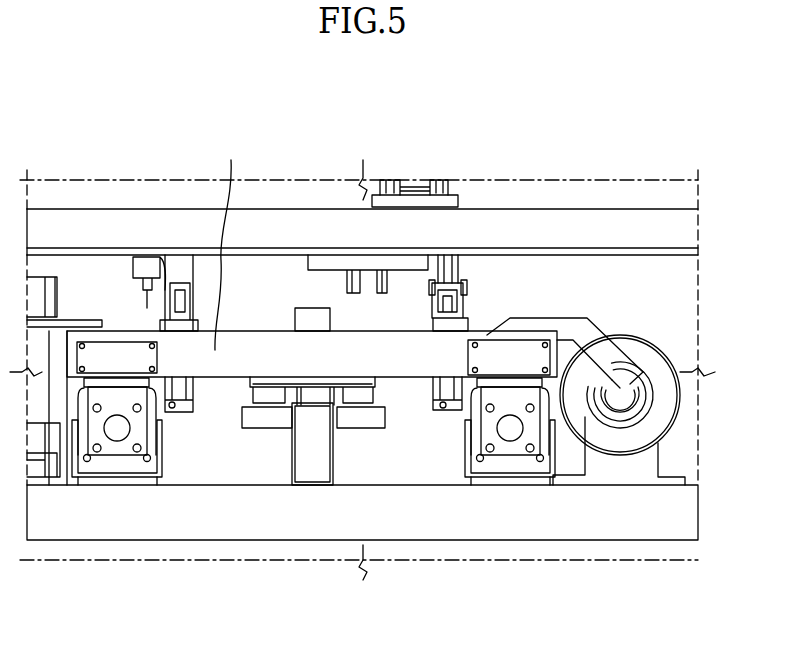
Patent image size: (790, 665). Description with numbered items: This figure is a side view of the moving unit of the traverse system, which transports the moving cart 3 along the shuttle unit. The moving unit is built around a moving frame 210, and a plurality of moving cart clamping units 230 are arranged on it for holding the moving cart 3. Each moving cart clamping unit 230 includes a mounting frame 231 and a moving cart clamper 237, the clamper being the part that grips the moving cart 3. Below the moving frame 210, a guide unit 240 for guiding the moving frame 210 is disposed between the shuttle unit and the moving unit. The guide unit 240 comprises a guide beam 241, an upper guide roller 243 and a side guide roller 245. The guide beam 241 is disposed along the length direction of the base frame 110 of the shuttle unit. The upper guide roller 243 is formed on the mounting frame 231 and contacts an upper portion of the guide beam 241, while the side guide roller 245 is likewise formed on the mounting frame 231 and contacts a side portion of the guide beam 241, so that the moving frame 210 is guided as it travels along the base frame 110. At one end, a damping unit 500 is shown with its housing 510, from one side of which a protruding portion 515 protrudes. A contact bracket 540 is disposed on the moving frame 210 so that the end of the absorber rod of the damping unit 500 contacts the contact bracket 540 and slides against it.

The moving cart 3 is at (678, 232).
The base frame 110 is at (667, 517).
The moving frame 210 is at (228, 350).
The moving cart clamping unit 230 is at (470, 278).
The mounting frame 231 is at (453, 325).
The moving cart clamper 237 is at (448, 275).
The guide unit 240 is at (318, 518).
The guide beam 241 is at (295, 467).
The upper guide roller 243 is at (312, 398).
The side guide roller 245 is at (270, 425).
The damping unit 500 is at (615, 371).
The housing 510 is at (683, 410).
The protruding portion 515 is at (648, 414).
The contact bracket 540 is at (588, 335).